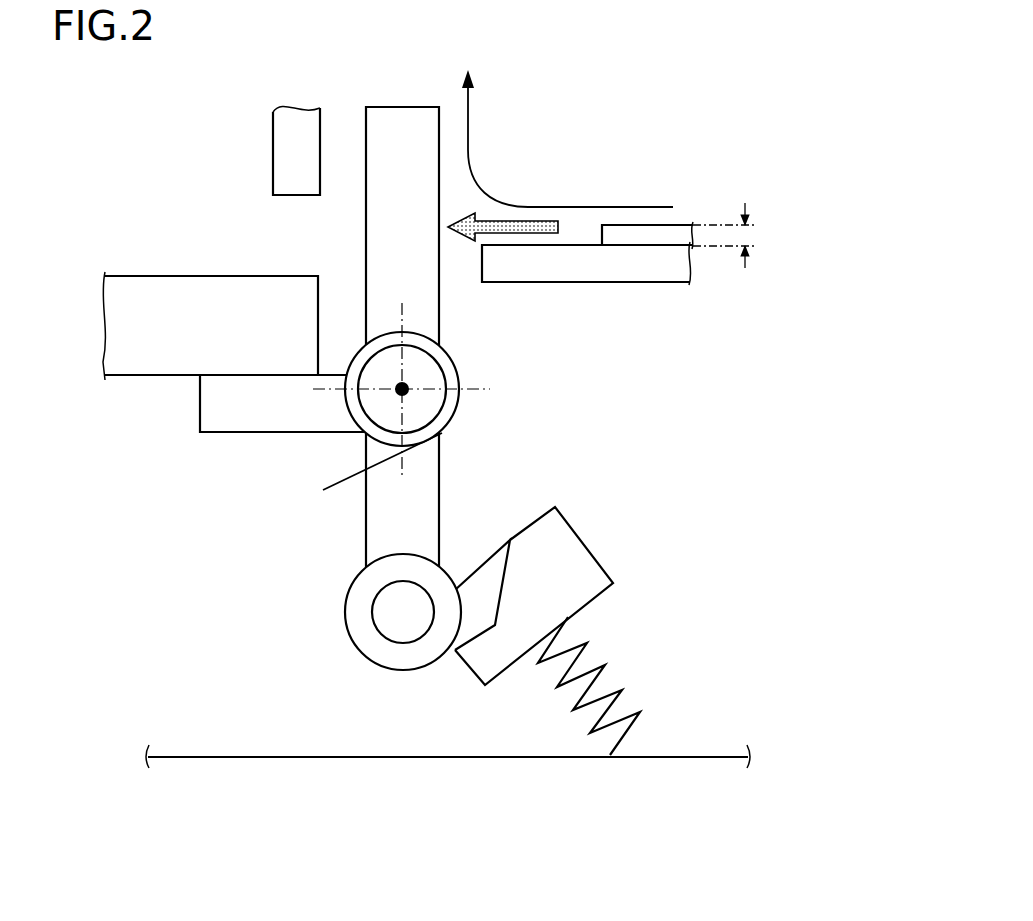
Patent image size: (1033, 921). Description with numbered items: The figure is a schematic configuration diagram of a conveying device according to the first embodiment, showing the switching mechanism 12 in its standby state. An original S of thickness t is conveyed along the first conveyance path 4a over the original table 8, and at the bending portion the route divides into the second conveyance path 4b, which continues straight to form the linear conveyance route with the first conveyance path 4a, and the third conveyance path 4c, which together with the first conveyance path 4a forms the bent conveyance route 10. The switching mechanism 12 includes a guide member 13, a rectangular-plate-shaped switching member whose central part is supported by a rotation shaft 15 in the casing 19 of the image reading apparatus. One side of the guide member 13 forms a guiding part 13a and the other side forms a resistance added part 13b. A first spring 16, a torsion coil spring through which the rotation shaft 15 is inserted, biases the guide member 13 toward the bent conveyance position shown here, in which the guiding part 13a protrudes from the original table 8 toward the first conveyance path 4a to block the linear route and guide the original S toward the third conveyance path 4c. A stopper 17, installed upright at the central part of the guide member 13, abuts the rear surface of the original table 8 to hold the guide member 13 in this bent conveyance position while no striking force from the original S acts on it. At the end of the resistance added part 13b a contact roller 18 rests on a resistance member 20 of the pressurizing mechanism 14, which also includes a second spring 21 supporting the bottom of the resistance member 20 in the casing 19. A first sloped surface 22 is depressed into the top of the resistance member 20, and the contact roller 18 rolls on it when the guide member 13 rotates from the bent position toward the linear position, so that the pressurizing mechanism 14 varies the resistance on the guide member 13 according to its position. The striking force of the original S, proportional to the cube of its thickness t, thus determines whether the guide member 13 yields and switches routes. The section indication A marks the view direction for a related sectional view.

The switching mechanism 12 is at (228, 94).
The guide member 13 is at (414, 337).
The guiding part 13a is at (372, 258).
The resistance added part 13b is at (373, 518).
The original table 8 is at (164, 280).
The bent conveyance route 10 is at (570, 207).
The original S is at (622, 225).
The thickness t is at (747, 234).
The rotation shaft 15 is at (443, 371).
The first spring 16 is at (447, 349).
The stopper 17 is at (237, 433).
The contact roller 18 is at (395, 656).
The casing 19 is at (334, 757).
The resistance member 20 is at (590, 544).
The second spring 21 is at (615, 675).
The first sloped surface 22 is at (498, 592).
The pressurizing mechanism 14 is at (598, 629).
The section line A is at (518, 435).
The first conveyance path 4a is at (822, 200).
The second conveyance path 4b is at (250, 248).
The third conveyance path 4c is at (468, 125).